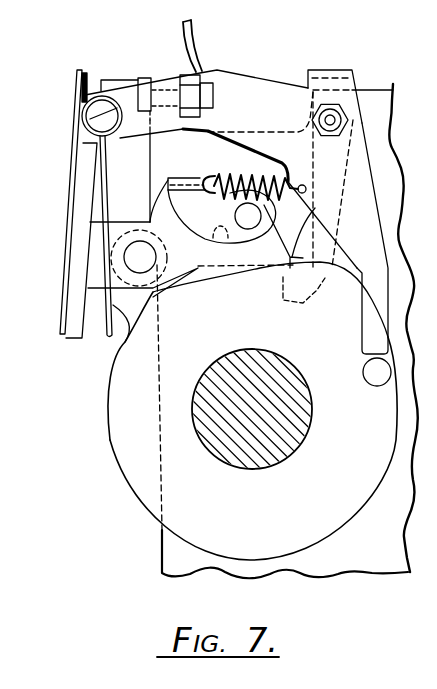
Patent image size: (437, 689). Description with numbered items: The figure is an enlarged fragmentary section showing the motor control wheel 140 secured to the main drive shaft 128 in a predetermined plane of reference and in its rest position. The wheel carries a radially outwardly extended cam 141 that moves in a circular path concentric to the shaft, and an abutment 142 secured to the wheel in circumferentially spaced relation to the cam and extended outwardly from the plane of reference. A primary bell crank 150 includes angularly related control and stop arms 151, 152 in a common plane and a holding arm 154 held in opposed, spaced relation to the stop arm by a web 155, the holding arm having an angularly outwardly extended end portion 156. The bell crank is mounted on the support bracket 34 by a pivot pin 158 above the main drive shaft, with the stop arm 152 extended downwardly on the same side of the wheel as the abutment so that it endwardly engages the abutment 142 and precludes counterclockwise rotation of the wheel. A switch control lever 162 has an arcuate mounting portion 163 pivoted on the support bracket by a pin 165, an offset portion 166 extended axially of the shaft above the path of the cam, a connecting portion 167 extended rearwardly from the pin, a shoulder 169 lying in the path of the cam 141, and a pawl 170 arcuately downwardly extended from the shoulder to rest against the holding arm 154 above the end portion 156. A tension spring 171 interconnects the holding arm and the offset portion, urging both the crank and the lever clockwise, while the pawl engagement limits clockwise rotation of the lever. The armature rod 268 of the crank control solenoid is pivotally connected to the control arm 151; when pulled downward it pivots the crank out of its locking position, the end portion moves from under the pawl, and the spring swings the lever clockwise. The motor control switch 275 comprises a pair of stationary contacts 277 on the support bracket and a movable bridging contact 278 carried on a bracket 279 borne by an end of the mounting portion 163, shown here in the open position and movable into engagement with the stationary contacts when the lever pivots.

The support bracket 34 is at (170, 557).
The main drive shaft 128 is at (262, 453).
The motor control wheel 140 is at (317, 533).
The cam 141 is at (209, 245).
The abutment 142 is at (377, 385).
The primary bell crank 150 is at (362, 80).
The control arm 151 is at (235, 95).
The stop arm 152 is at (360, 207).
The holding arm 154 is at (326, 255).
The web 155 is at (333, 68).
The end portion 156 is at (283, 282).
The pivot pin 158 is at (335, 118).
The switch control lever 162 is at (175, 172).
The arcuate mounting portion 163 is at (151, 284).
The pin 165 is at (140, 255).
The offset portion 166 is at (192, 177).
The connecting portion 167 is at (203, 214).
The shoulder 169 is at (248, 222).
The pawl 170 is at (323, 225).
The tension spring 171 is at (262, 153).
The armature rod 268 is at (133, 328).
The motor control switch 275 is at (96, 68).
The stationary contacts 277 is at (121, 80).
The bridging contact 278 is at (80, 97).
The bracket 279 is at (80, 338).